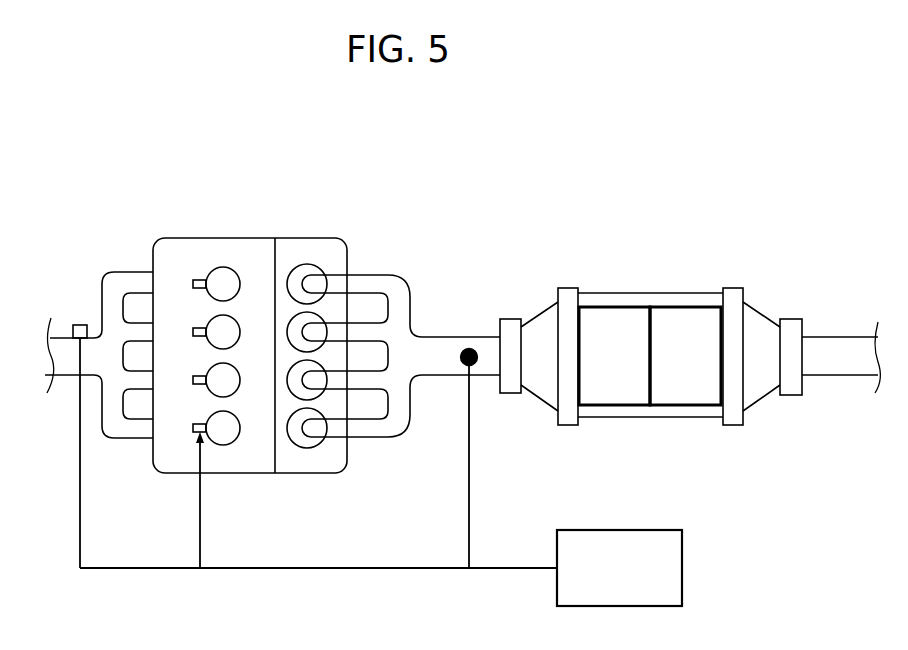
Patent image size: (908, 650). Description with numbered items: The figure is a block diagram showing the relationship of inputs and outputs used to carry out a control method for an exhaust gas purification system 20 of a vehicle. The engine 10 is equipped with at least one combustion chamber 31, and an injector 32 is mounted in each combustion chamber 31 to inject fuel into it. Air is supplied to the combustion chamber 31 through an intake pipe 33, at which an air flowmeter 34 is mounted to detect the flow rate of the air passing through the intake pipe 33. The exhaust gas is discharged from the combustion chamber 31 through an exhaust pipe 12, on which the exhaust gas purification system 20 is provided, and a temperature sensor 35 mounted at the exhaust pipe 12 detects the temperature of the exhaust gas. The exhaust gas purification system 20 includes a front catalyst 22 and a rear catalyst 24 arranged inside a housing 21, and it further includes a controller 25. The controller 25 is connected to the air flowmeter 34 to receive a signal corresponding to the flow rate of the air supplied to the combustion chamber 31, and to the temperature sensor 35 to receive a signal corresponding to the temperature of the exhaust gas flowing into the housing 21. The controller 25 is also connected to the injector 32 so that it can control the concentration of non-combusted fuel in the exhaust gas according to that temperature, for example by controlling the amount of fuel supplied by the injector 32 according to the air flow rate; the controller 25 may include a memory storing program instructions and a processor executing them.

The engine 10 is at (228, 238).
The exhaust pipe 12 is at (444, 337).
The exhaust gas purification system 20 is at (776, 278).
The housing 21 is at (540, 312).
The front catalyst 22 is at (612, 300).
The rear catalyst 24 is at (686, 300).
The controller 25 is at (618, 530).
The combustion chamber 31 is at (200, 238).
The injector 32 is at (193, 284).
The intake pipe 33 is at (67, 375).
The air flowmeter 34 is at (80, 325).
The temperature sensor 35 is at (475, 349).